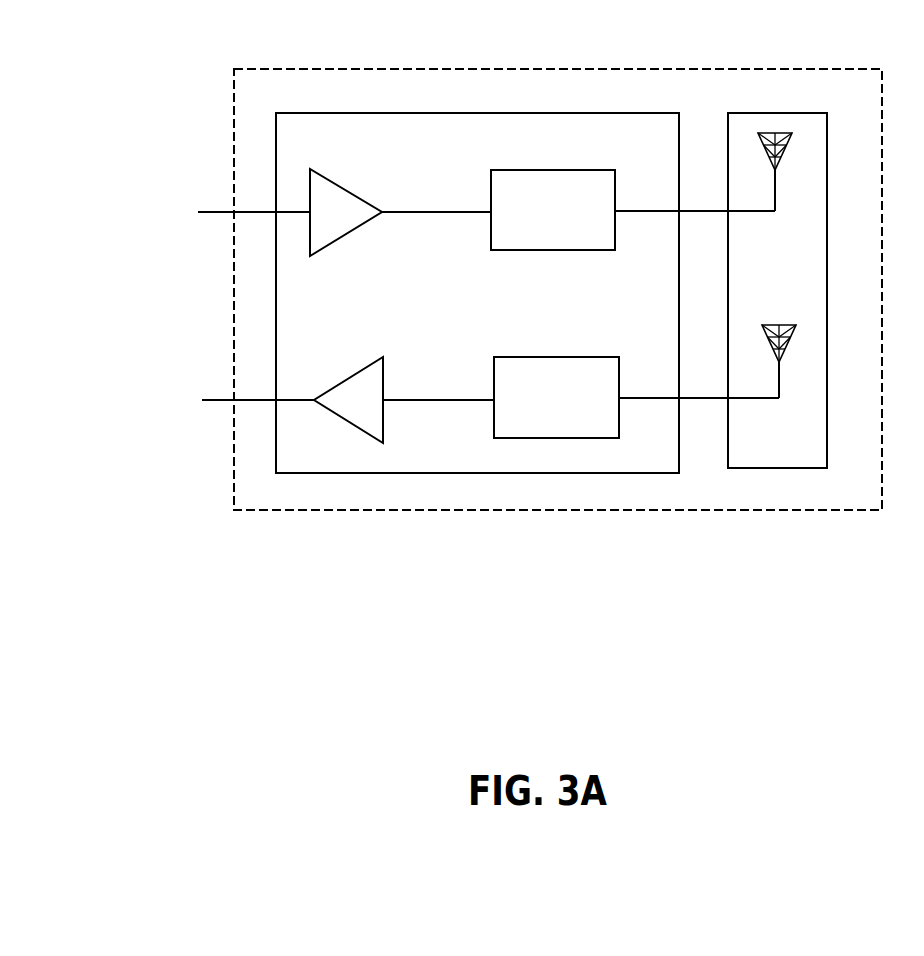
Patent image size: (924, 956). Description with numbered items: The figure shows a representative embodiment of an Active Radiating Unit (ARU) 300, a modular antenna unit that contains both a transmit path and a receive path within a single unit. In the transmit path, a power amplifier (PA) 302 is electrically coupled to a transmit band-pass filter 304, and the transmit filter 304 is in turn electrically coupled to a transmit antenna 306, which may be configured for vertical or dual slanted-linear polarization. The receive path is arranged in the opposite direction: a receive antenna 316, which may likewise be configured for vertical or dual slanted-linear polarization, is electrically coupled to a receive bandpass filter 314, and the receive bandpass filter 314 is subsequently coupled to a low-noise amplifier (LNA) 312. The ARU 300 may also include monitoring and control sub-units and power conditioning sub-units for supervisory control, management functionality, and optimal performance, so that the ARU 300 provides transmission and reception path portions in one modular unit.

The active radiating unit 300 is at (890, 619).
The power amplifier 302 is at (344, 199).
The transmit band-pass filter 304 is at (633, 197).
The transmit antenna 306 is at (790, 172).
The low-noise amplifier 312 is at (348, 400).
The receive bandpass filter 314 is at (636, 385).
The receive antenna 316 is at (791, 361).